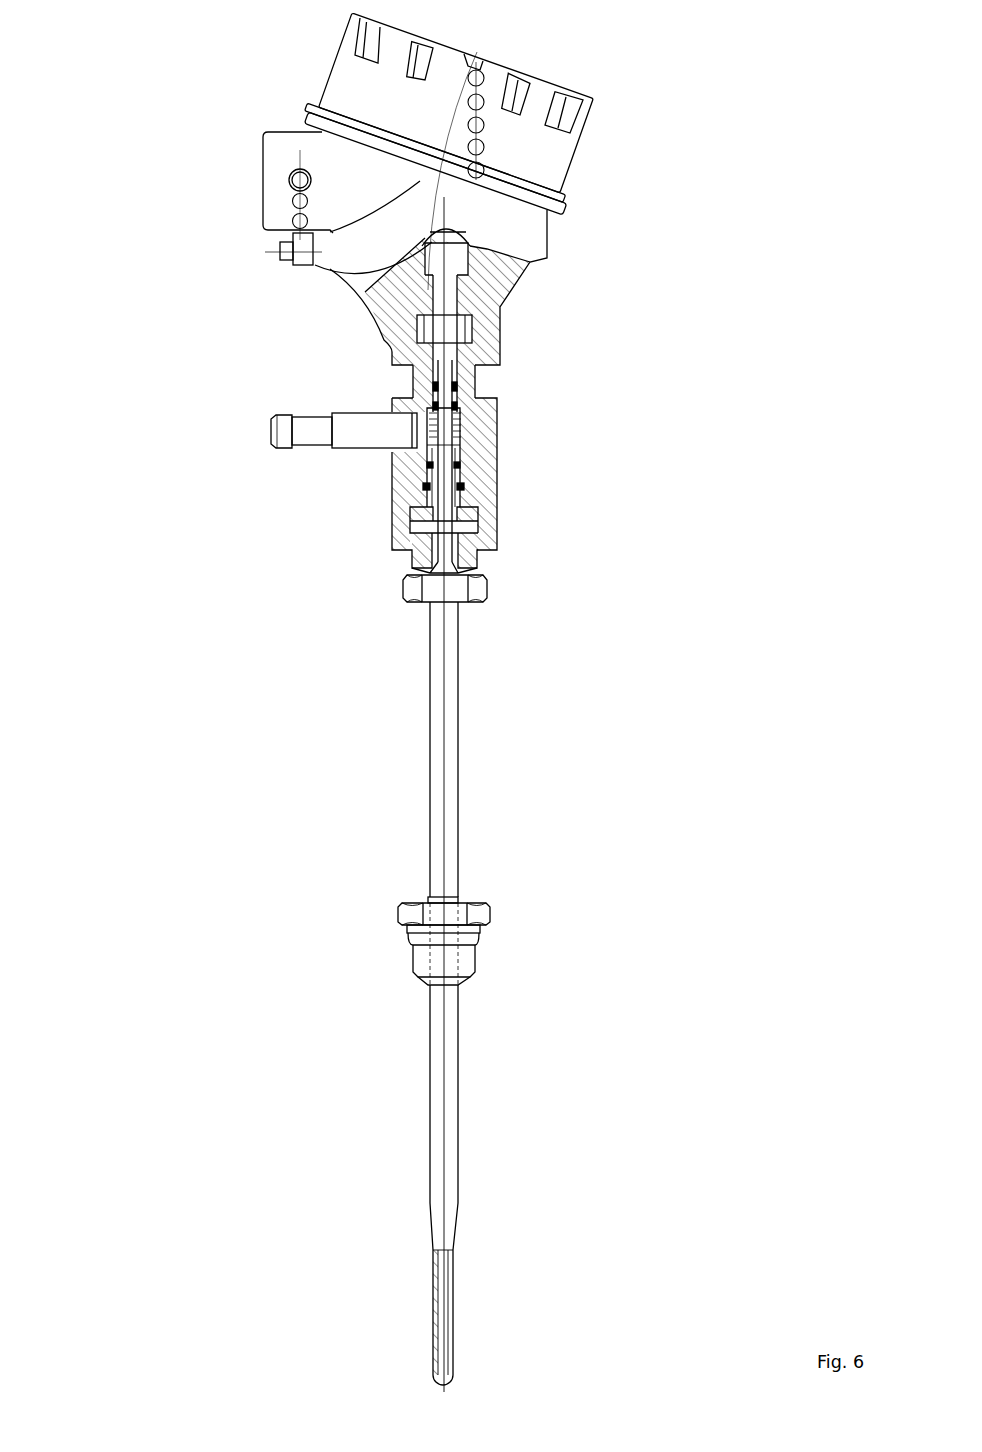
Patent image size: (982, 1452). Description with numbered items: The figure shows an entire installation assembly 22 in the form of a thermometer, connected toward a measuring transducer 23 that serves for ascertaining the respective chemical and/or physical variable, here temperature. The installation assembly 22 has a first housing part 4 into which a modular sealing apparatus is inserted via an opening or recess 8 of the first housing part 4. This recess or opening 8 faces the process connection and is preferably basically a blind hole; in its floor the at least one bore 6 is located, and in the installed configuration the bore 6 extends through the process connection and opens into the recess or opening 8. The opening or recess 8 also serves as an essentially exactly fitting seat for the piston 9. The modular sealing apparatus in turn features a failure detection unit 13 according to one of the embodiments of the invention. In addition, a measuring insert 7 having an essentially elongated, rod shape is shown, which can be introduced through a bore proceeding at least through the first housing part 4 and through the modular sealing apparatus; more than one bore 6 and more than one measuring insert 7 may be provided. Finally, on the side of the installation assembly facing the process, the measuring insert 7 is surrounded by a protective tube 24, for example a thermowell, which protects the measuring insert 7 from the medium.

The installation assembly 22 is at (390, 700).
The measuring transducer 23 is at (595, 197).
The first housing part 4 is at (512, 327).
The recess or opening 8 is at (495, 367).
The failure detection unit 13 is at (360, 467).
The bore 6 is at (450, 510).
The piston 9 is at (470, 542).
The measuring insert 7 is at (452, 553).
The protective tube 24 is at (482, 725).